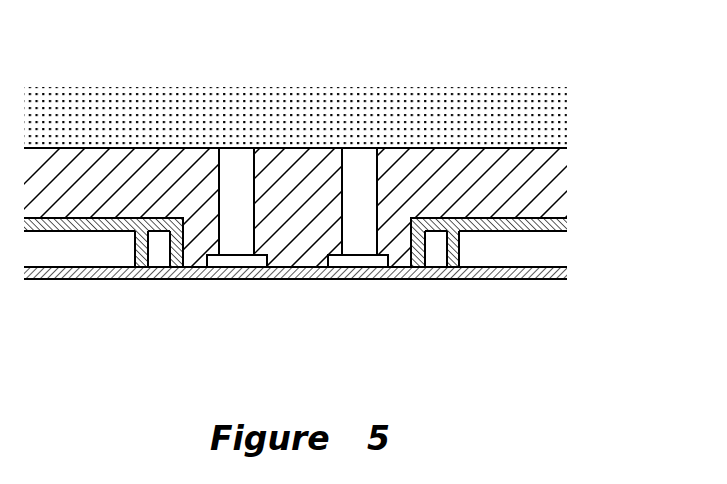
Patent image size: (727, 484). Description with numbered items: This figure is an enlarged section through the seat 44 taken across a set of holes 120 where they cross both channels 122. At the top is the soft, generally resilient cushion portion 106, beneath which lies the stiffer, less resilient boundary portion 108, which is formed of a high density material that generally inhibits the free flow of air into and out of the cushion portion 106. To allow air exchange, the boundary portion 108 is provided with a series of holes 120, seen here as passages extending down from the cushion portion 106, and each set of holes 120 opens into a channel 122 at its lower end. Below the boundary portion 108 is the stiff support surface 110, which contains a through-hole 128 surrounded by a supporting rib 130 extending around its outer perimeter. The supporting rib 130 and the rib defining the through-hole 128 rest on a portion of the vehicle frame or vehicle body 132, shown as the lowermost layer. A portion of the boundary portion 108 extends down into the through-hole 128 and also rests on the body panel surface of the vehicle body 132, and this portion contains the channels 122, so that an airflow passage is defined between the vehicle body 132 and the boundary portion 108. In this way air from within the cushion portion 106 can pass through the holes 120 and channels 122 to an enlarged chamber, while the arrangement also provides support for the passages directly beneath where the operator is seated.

The seat 44 is at (523, 63).
The cushion portion 106 is at (548, 117).
The boundary portion 108 is at (527, 180).
The support surface 110 is at (567, 222).
The holes 120 is at (240, 162).
The channel 122 is at (232, 258).
The through-hole 128 is at (187, 262).
The supporting rib 130 is at (117, 280).
The vehicle body 132 is at (292, 280).